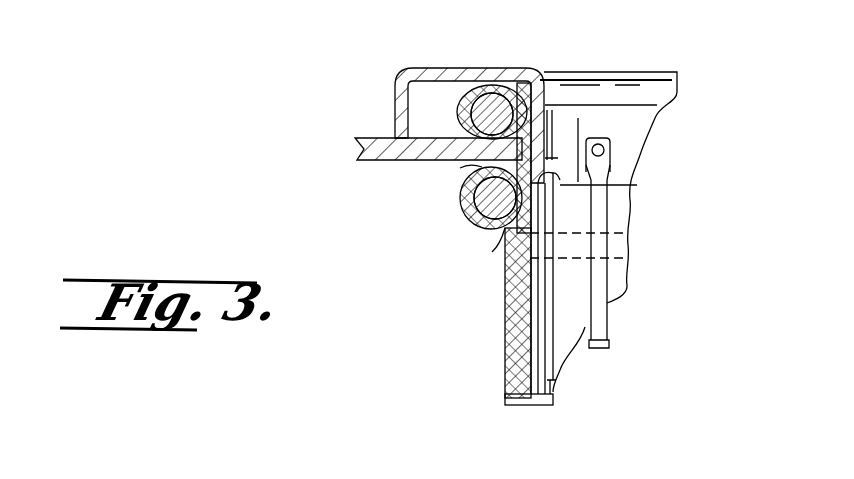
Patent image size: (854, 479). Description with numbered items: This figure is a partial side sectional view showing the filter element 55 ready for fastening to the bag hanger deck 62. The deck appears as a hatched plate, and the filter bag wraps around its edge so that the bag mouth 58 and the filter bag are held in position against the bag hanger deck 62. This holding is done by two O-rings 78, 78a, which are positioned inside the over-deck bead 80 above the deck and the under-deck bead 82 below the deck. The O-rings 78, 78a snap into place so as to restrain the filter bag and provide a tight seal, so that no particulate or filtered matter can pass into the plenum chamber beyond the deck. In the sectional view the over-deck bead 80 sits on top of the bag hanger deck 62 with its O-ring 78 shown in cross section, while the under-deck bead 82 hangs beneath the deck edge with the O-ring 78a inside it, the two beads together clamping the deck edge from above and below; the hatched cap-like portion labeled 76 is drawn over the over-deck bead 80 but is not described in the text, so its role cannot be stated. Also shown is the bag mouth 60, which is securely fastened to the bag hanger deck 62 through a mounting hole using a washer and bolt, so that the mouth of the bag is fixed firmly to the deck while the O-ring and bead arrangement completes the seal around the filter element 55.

The filter element 55 is at (636, 235).
The bag mouth 58 is at (503, 327).
The bag mouth 60 is at (596, 72).
The bag hanger deck 62 is at (357, 150).
The cap 76 is at (406, 77).
The O-ring 78 is at (470, 222).
The O-ring 78a is at (455, 164).
The over-deck bead 80 is at (455, 100).
The under-deck bead 82 is at (508, 230).